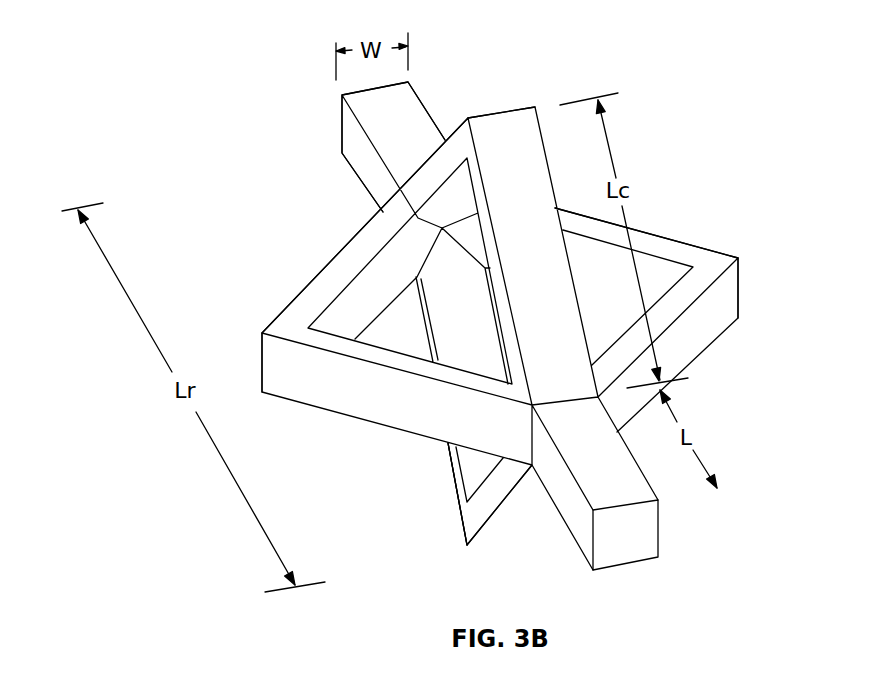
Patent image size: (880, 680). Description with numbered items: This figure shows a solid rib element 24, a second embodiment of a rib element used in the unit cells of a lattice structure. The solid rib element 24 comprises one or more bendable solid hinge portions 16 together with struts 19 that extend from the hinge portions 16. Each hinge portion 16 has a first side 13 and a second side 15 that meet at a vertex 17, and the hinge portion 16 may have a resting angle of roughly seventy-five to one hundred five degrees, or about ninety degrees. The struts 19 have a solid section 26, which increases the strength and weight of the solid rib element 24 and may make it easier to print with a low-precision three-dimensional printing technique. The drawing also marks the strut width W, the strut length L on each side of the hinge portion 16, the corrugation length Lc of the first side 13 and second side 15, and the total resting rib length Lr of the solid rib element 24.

The first side 13 is at (743, 395).
The second side 15 is at (450, 133).
The vertex 17 is at (500, 110).
The strut 19 is at (388, 126).
The solid section 26 is at (632, 533).
The hinge portion 16 is at (676, 156).
The solid rib element 24 is at (772, 60).